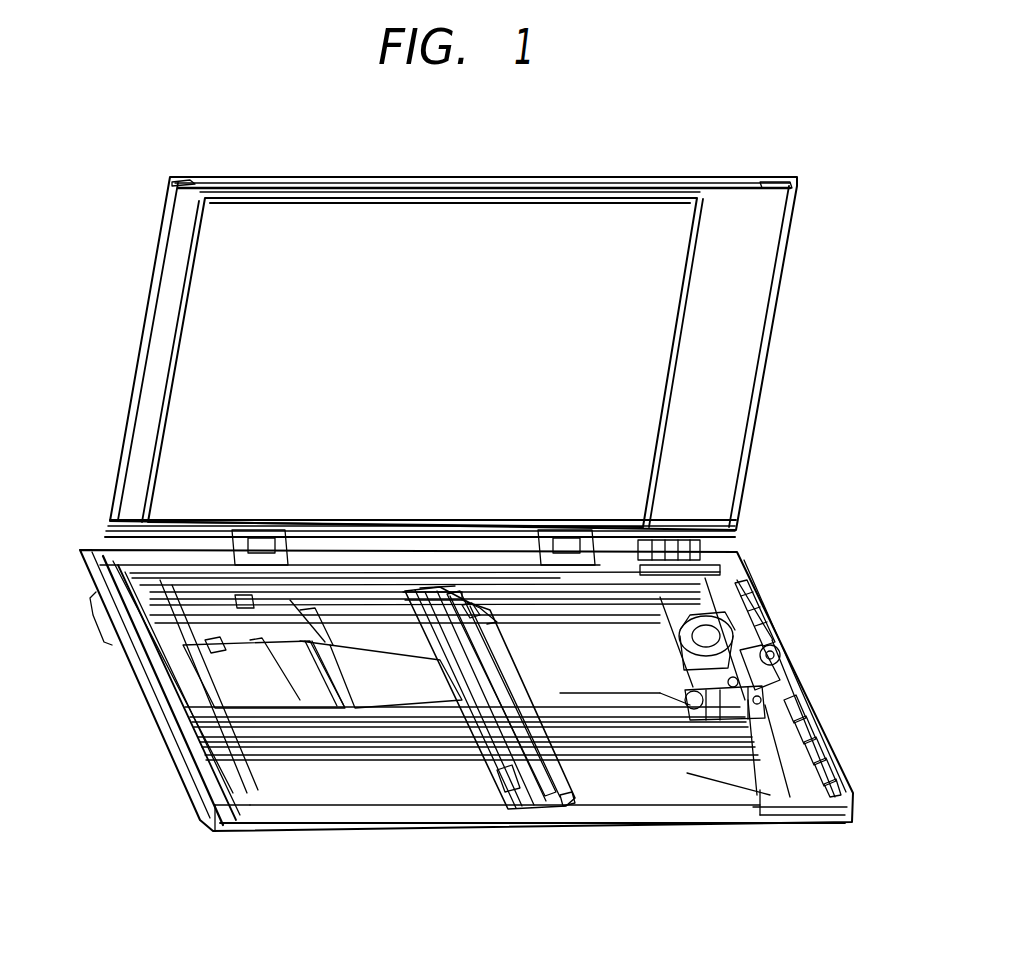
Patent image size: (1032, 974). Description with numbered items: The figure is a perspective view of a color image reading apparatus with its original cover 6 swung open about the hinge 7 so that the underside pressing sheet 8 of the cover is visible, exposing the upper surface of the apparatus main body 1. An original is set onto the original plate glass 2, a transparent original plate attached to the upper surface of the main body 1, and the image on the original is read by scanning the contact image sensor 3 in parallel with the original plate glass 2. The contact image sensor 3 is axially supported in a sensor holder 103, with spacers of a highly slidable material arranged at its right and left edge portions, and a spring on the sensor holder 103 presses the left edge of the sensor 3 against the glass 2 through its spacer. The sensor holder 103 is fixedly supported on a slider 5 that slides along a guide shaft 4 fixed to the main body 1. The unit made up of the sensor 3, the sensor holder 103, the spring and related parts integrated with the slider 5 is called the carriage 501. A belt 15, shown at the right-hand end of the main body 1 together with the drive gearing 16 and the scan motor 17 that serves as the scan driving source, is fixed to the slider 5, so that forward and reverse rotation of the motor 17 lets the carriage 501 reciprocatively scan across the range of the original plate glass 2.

The apparatus main body 1 is at (814, 699).
The original plate glass 2 is at (193, 628).
The contact image sensor 3 is at (505, 783).
The guide shaft 4 is at (237, 738).
The slider 5 is at (463, 733).
The pressure plate / cover 6 is at (166, 300).
The hinge 7 is at (120, 530).
The pressing sheet 8 is at (208, 363).
The belt 15 is at (742, 693).
The gear 16 is at (775, 646).
The motor 17 is at (722, 620).
The sensor holder 103 is at (499, 773).
The carriage 501 is at (500, 647).